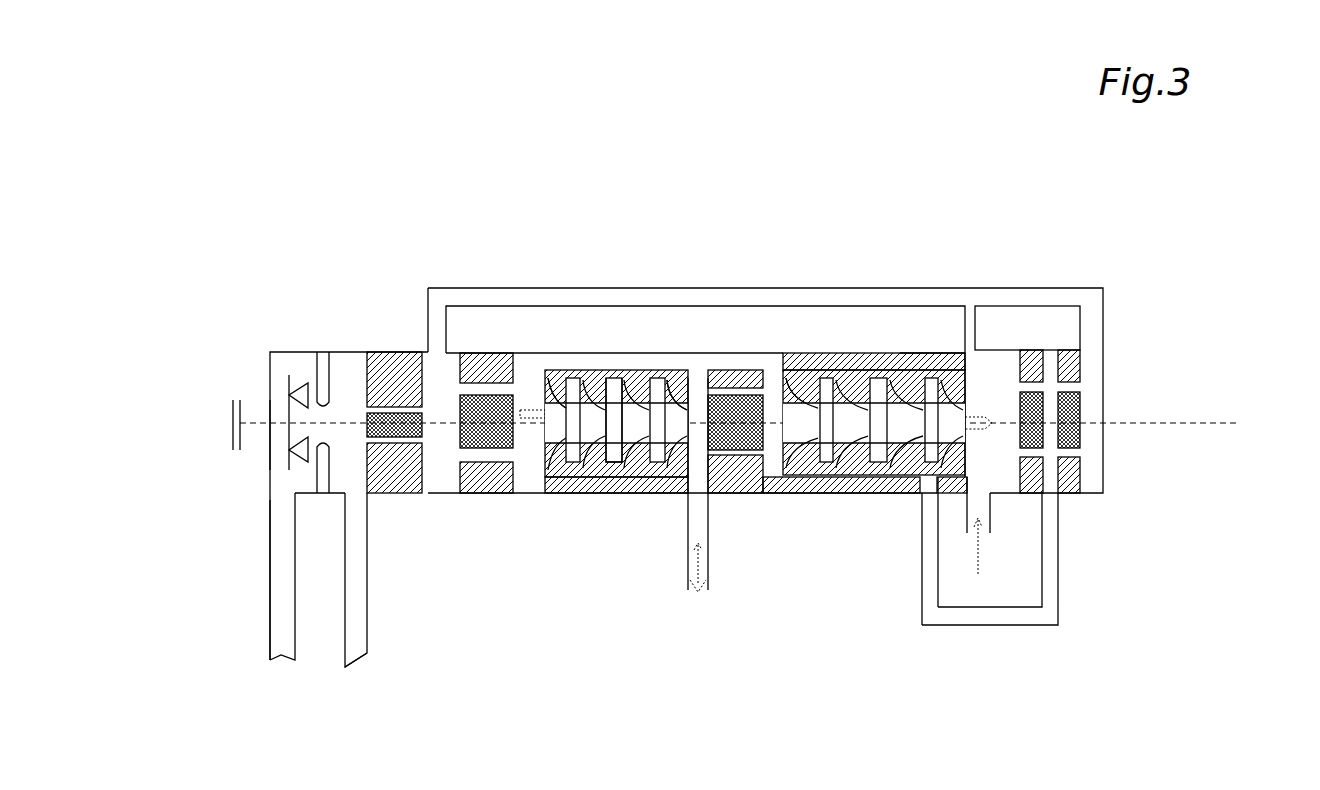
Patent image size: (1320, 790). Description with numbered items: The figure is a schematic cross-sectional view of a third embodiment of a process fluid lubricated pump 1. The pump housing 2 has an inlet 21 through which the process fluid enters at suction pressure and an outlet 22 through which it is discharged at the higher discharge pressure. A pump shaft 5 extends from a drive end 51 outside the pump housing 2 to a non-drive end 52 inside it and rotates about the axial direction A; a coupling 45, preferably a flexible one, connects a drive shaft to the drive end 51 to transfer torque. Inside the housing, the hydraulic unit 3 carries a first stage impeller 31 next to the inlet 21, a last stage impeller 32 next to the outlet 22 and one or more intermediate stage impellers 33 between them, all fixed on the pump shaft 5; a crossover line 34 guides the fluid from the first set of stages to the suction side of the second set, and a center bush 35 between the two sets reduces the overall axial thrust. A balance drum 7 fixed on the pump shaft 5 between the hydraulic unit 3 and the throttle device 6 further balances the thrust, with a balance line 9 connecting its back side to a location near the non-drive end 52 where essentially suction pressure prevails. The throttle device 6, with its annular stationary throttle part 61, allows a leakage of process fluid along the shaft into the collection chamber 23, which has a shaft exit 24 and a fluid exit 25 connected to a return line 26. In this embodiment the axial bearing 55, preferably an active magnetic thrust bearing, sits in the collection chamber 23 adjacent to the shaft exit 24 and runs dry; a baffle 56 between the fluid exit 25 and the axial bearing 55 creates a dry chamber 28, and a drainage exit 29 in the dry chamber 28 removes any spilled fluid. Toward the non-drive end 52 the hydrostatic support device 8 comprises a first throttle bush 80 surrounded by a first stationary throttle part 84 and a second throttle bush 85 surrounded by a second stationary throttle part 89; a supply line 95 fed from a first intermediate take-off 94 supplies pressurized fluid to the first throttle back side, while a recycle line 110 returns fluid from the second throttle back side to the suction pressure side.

The process fluid lubricated pump 1 is at (708, 165).
The pump housing 2 is at (286, 351).
The hydraulic unit 3 is at (822, 505).
The pump shaft 5 is at (622, 470).
The throttle device 6 is at (392, 351).
The balance drum 7 is at (513, 445).
The hydrostatic support device 8 is at (1057, 341).
The balance line 9 is at (846, 287).
The inlet 21 is at (990, 508).
The outlet 22 is at (712, 505).
The collection chamber 23 is at (344, 365).
The shaft exit 24 is at (268, 418).
The fluid exit 25 is at (358, 495).
The return line 26 is at (368, 628).
The dry chamber 28 is at (297, 452).
The drainage exit 29 is at (292, 478).
The first stage impeller 31 is at (927, 380).
The last stage impeller 32 is at (697, 380).
The intermediate stage impeller 33 is at (568, 375).
The crossover line 34 is at (620, 380).
The center bush 35 is at (740, 400).
The coupling 45 is at (232, 432).
The drive end 51 is at (265, 447).
The non-drive end 52 is at (1082, 432).
The axial bearing 55 is at (304, 382).
The baffle 56 is at (313, 495).
The stationary throttle part 61 is at (404, 494).
The first throttle bush 80 is at (1015, 398).
The first stationary throttle part 84 is at (1036, 350).
The second throttle bush 85 is at (1103, 445).
The second stationary throttle part 89 is at (1082, 367).
The first intermediate take-off 94 is at (908, 500).
The supply line 95 is at (1022, 622).
The recycle line 110 is at (985, 286).
The axial direction A is at (1218, 426).